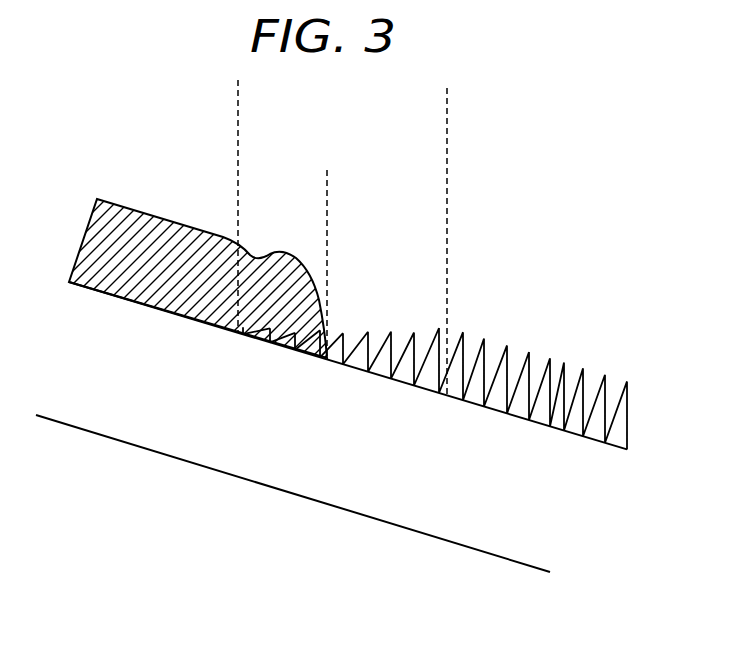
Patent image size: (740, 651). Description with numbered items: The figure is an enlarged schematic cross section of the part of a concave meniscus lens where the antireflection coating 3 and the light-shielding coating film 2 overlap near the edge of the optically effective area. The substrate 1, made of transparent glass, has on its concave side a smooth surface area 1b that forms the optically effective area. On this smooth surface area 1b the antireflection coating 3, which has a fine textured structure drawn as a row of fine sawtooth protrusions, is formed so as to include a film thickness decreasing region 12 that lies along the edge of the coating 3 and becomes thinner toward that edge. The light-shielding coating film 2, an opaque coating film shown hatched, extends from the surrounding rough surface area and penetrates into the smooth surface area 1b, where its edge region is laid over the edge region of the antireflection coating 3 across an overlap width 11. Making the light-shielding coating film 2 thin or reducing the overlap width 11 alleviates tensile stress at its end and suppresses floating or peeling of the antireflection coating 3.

The substrate 1 is at (143, 448).
The smooth surface area 1b is at (580, 436).
The light-shielding coating film 2 is at (127, 208).
The antireflection coating 3 is at (605, 384).
The overlap width 11 is at (325, 189).
The film thickness decreasing region 12 is at (240, 110).